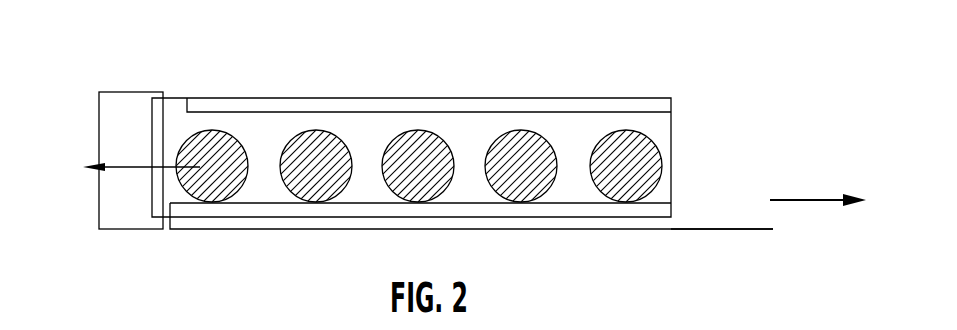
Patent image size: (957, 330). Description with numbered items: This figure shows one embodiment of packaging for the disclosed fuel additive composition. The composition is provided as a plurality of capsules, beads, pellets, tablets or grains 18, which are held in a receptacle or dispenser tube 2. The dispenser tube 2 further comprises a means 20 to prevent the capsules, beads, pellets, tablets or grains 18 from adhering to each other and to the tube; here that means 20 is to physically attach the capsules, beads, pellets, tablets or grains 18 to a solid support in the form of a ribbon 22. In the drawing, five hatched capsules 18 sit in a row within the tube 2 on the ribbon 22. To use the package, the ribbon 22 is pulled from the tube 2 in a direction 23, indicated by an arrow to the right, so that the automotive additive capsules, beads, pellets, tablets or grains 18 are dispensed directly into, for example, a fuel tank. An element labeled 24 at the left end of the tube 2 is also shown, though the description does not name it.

The dispenser tube 2 is at (566, 90).
The capsules, beads, pellets, tablets or grains 18 is at (226, 130).
The means to prevent adhering 20 is at (737, 237).
The ribbon 22 is at (700, 220).
The direction 23 is at (826, 185).
The header 24 is at (75, 211).